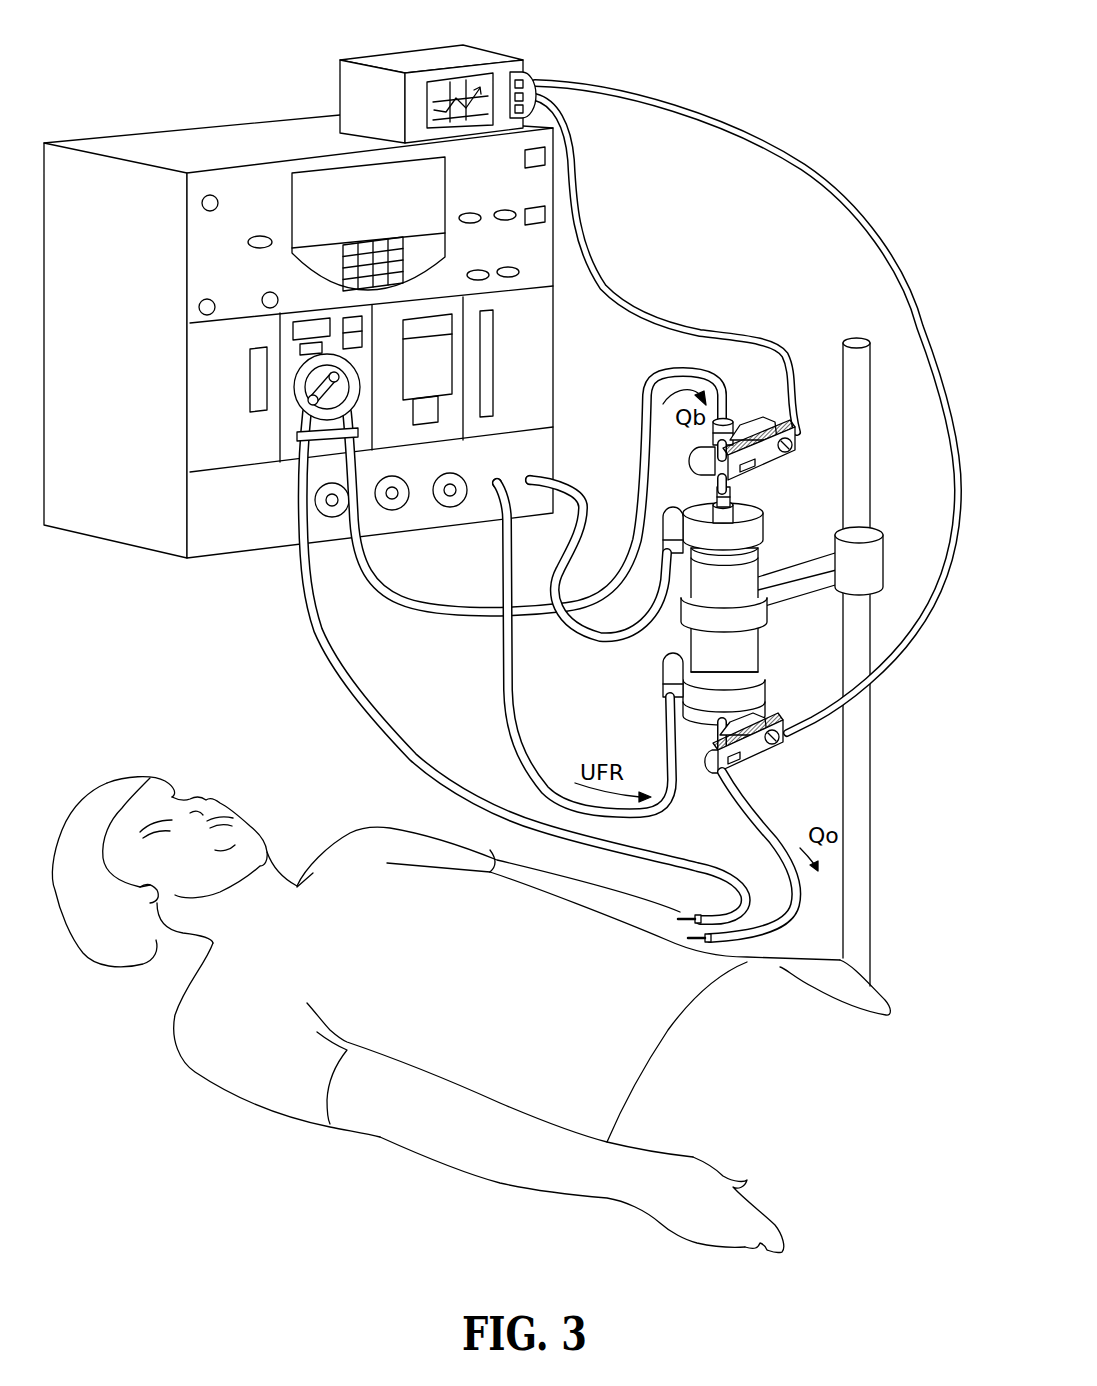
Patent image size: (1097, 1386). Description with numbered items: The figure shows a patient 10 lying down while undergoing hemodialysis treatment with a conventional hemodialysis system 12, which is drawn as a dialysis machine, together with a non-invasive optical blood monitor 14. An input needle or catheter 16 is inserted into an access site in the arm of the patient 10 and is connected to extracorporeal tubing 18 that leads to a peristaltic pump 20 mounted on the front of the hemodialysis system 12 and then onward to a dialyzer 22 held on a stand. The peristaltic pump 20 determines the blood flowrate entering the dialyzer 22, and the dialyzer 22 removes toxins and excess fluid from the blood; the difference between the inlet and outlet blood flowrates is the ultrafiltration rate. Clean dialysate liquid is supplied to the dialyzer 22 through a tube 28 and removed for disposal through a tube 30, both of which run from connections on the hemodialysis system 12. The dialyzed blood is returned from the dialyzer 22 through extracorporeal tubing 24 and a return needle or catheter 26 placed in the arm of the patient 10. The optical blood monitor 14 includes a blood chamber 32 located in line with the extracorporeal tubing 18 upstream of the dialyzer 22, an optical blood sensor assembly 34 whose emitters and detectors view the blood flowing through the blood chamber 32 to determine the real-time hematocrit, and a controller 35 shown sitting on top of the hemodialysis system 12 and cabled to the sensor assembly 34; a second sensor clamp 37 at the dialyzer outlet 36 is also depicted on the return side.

The patient 10 is at (158, 1056).
The hemodialysis system 12 is at (124, 110).
The optical blood monitor 14 is at (540, 56).
The input needle or catheter 16 is at (687, 917).
The extracorporeal tubing 18 is at (316, 618).
The peristaltic pump 20 is at (307, 412).
The dialyzer 22 is at (753, 563).
The extracorporeal tubing 24 is at (752, 811).
The return needle or catheter 26 is at (688, 942).
The tube 28 is at (518, 733).
The tube 30 is at (568, 489).
The blood chamber 32 is at (728, 420).
The optical blood sensor assembly 34 is at (788, 451).
The controller 35 is at (408, 60).
The dialyzer outlet 36 is at (720, 774).
The outlet sensor 37 is at (785, 742).